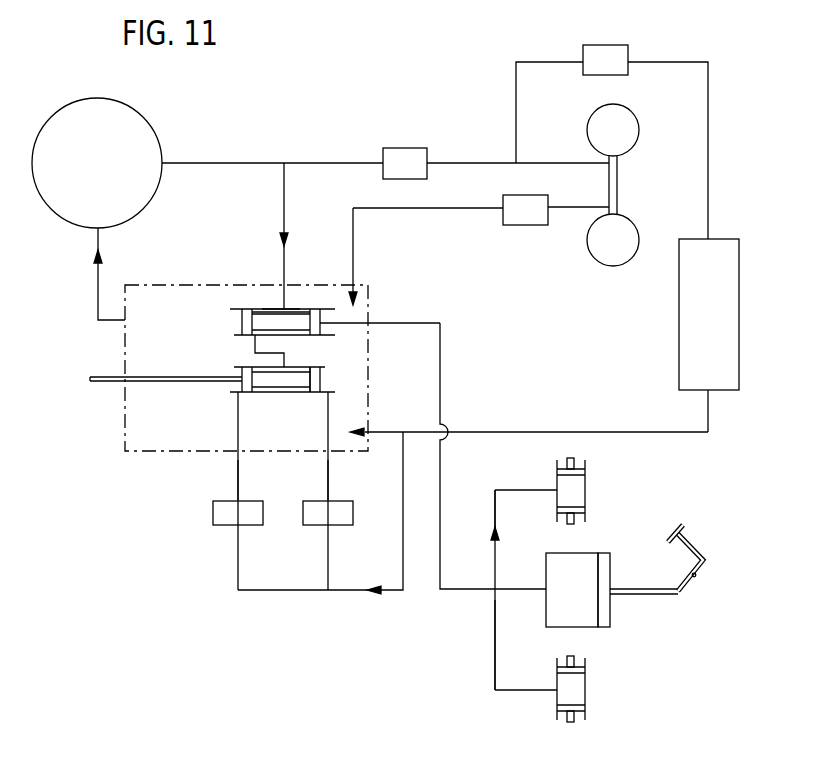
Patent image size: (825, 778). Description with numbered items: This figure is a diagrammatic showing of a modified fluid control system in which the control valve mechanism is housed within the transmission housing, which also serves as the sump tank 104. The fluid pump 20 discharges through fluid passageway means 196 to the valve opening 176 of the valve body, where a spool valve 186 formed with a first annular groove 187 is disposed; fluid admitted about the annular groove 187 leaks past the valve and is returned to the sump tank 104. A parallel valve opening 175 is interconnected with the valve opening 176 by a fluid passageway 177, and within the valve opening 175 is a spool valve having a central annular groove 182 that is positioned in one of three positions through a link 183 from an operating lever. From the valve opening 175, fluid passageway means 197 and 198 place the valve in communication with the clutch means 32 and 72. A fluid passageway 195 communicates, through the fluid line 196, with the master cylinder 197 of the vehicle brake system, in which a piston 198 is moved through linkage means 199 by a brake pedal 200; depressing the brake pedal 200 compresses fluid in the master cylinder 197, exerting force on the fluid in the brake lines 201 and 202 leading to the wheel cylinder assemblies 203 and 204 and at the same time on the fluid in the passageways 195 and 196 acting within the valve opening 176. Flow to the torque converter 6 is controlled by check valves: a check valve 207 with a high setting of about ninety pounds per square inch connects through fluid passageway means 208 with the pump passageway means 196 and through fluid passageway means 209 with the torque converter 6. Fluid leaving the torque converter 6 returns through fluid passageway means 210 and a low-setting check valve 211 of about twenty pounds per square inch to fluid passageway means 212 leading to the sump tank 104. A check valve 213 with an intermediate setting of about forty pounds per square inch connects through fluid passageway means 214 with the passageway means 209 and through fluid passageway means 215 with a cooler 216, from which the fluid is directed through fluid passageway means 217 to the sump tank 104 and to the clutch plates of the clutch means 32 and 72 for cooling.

The fluid pump 20 is at (158, 130).
The fluid passageway means 196 is at (238, 163).
The fluid passageway means 208 is at (345, 163).
The check valve 207 is at (420, 148).
The fluid passageway means 209 is at (545, 163).
The fluid passageway means 214 is at (537, 62).
The check valve 213 is at (628, 48).
The fluid passageway means 215 is at (708, 112).
The torque converter 6 is at (636, 173).
The fluid passageway means 212 is at (428, 208).
The check valve 211 is at (512, 228).
The fluid passageway means 210 is at (573, 208).
The cooler 216 is at (740, 270).
The fluid passageway means 217 is at (715, 432).
The sump tank 104 is at (140, 451).
The spool valve 186 is at (243, 321).
The first annular groove 187 is at (258, 311).
The valve opening 176 is at (272, 309).
The fluid passageway 177 is at (254, 344).
The central annular groove 182 is at (265, 392).
The valve opening 175 is at (295, 393).
The link 183 is at (185, 385).
The fluid passageway 195 is at (414, 323).
The master cylinder 197 is at (237, 478).
The piston 198 is at (330, 478).
The clutch means 32 is at (223, 527).
The clutch means 72 is at (340, 527).
The brake line 202 is at (494, 505).
The brake line 201 is at (492, 618).
The wheel cylinder assembly 204 is at (615, 466).
The wheel cylinder assembly 203 is at (613, 686).
The linkage means 199 is at (668, 596).
The brake pedal 200 is at (698, 545).